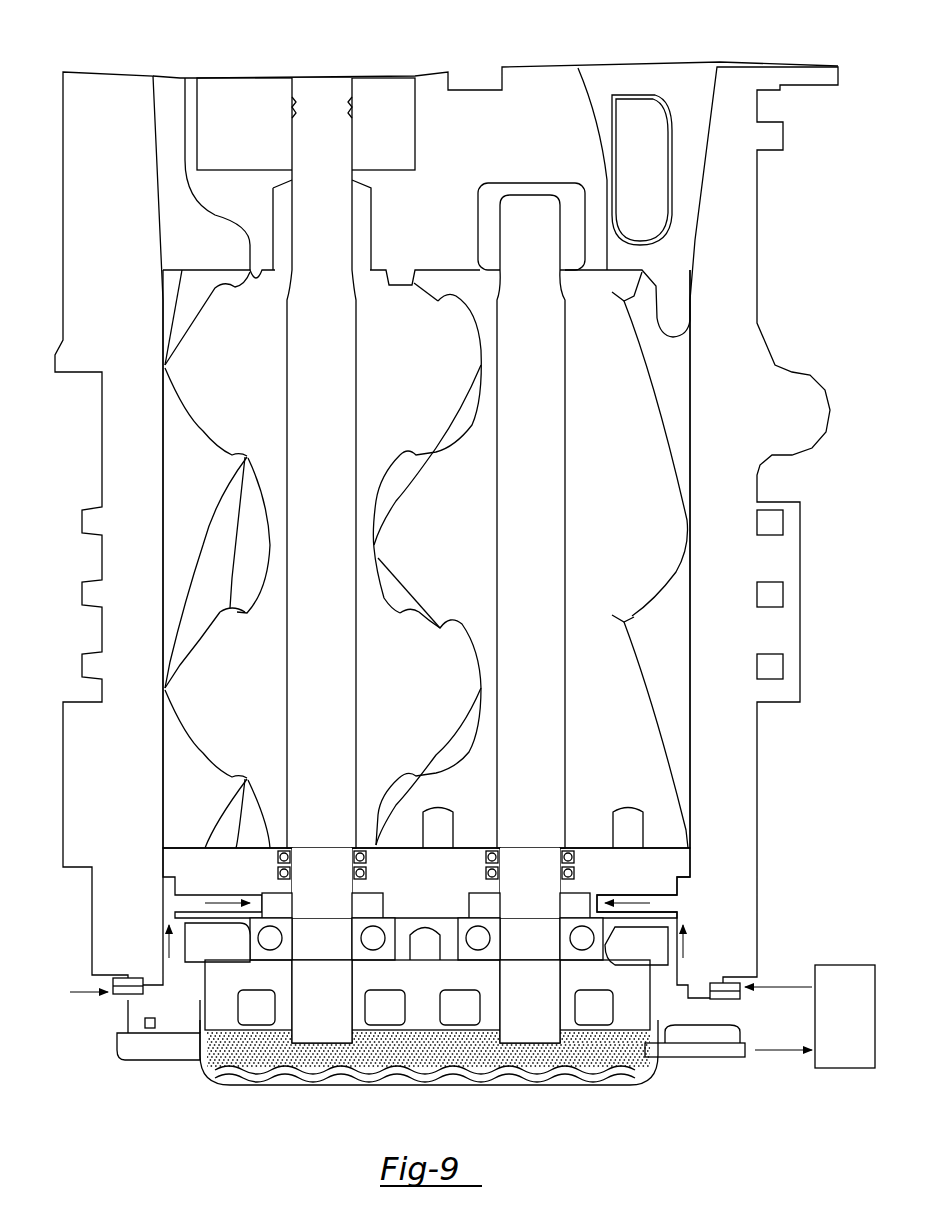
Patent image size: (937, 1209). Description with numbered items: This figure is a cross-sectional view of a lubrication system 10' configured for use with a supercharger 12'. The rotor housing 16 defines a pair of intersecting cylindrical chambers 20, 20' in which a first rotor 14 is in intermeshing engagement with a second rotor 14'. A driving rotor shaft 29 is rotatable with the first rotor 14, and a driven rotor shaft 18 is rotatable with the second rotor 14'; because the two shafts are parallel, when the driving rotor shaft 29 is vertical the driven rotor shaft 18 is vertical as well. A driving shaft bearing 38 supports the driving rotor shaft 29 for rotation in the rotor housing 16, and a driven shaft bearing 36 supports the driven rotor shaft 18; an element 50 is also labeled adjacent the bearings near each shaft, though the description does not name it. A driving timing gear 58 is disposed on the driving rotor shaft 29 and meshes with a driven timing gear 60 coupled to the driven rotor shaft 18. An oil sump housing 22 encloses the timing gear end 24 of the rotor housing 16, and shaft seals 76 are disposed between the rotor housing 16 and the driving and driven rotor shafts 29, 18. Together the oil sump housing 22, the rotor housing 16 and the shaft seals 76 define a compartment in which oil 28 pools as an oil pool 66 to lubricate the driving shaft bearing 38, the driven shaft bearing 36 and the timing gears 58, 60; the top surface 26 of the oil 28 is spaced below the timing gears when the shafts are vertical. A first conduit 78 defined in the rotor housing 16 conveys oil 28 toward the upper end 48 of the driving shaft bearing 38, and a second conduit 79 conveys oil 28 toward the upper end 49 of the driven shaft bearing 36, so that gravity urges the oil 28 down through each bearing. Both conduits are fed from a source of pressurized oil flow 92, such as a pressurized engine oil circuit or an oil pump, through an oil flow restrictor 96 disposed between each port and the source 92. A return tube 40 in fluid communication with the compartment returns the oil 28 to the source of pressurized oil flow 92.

The lubrication system 10' is at (64, 1091).
The supercharger 12' is at (430, 509).
The first rotor 14 is at (426, 559).
The second rotor 14' is at (650, 560).
The rotor housing 16 is at (100, 412).
The driven rotor shaft 18 is at (538, 200).
The cylindrical chamber 20 is at (271, 144).
The cylindrical chamber 20' is at (648, 216).
The oil sump housing 22 is at (288, 1086).
The timing gear end 24 is at (125, 1020).
The top surface 26 is at (212, 1022).
The oil 28 is at (396, 1082).
The driving rotor shaft 29 is at (328, 86).
The driven shaft bearing 36 is at (610, 950).
The driving shaft bearing 38 is at (248, 949).
The return tube 40 is at (743, 1060).
The upper end 48 is at (268, 902).
The upper end 49 is at (588, 910).
The bearing 50 is at (283, 903).
The driving timing gear 58 is at (212, 1003).
The driven timing gear 60 is at (640, 1003).
The oil pool 66 is at (448, 1062).
The shaft seals 76 is at (291, 856).
The first conduit 78 is at (162, 892).
The second conduit 79 is at (693, 892).
The source of pressurized oil flow 92 is at (845, 1070).
The oil flow restrictor 96 is at (108, 979).